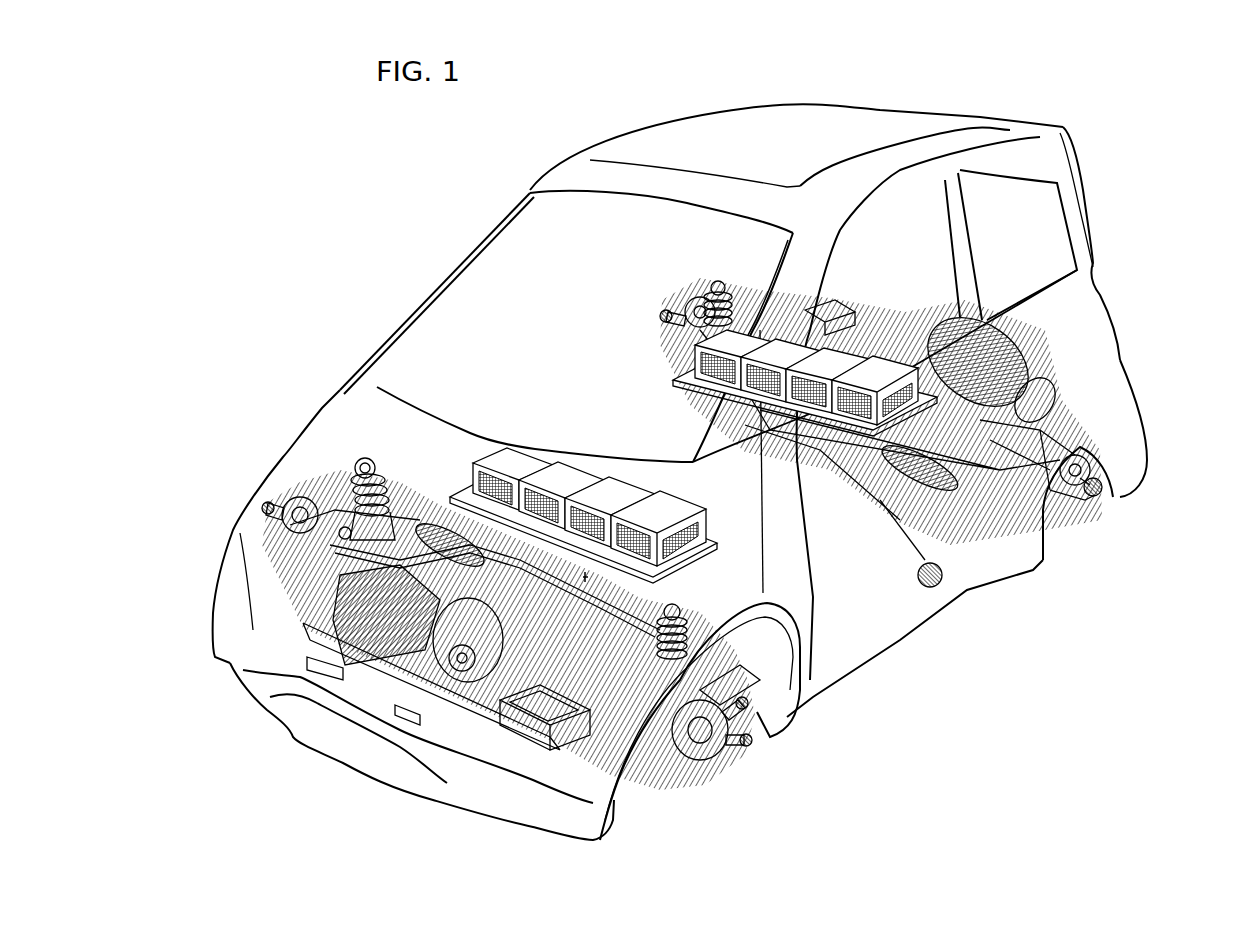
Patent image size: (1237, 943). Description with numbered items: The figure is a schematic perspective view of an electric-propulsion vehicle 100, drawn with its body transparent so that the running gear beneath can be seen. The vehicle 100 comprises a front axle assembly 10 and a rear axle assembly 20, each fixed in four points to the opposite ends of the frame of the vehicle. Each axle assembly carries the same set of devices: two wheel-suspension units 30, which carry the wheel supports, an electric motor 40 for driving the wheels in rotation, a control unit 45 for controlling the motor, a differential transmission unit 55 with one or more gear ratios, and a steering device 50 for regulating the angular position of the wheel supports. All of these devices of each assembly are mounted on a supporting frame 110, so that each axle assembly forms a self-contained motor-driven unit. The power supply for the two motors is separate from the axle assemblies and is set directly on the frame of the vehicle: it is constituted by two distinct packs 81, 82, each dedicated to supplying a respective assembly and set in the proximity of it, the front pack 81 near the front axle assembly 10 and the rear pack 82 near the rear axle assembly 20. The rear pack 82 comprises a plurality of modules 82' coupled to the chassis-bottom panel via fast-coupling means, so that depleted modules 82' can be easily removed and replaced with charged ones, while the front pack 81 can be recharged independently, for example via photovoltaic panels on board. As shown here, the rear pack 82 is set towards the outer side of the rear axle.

The front axle assembly 10 is at (773, 767).
The rear axle assembly 20 is at (1107, 523).
The wheel-suspension unit 30 is at (280, 493).
The electric motor 40 is at (317, 622).
The control unit 45 is at (520, 737).
The steering device 50 is at (607, 584).
The differential transmission unit 55 is at (483, 567).
The front battery pack 81 is at (560, 432).
The rear battery pack 82 is at (755, 362).
The battery module 82' is at (810, 329).
The electric-propulsion vehicle 100 is at (397, 267).
The supporting frame 110 is at (925, 593).